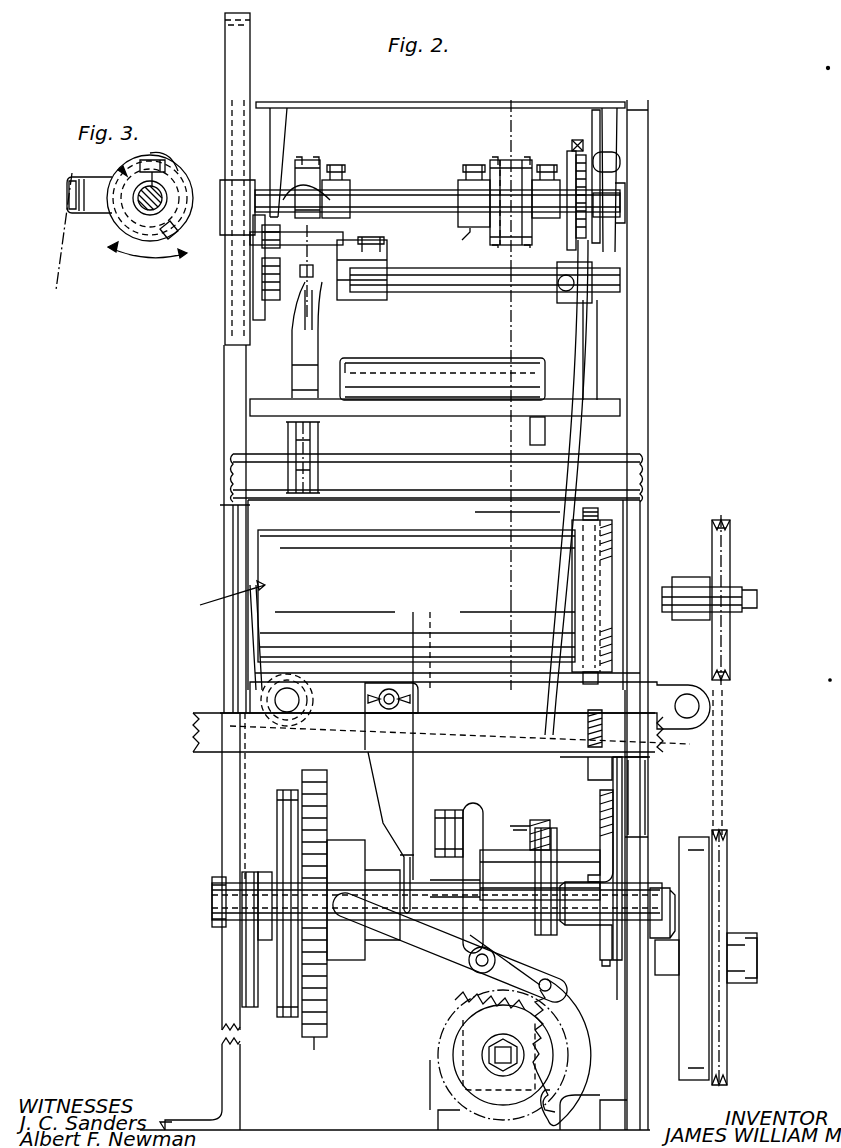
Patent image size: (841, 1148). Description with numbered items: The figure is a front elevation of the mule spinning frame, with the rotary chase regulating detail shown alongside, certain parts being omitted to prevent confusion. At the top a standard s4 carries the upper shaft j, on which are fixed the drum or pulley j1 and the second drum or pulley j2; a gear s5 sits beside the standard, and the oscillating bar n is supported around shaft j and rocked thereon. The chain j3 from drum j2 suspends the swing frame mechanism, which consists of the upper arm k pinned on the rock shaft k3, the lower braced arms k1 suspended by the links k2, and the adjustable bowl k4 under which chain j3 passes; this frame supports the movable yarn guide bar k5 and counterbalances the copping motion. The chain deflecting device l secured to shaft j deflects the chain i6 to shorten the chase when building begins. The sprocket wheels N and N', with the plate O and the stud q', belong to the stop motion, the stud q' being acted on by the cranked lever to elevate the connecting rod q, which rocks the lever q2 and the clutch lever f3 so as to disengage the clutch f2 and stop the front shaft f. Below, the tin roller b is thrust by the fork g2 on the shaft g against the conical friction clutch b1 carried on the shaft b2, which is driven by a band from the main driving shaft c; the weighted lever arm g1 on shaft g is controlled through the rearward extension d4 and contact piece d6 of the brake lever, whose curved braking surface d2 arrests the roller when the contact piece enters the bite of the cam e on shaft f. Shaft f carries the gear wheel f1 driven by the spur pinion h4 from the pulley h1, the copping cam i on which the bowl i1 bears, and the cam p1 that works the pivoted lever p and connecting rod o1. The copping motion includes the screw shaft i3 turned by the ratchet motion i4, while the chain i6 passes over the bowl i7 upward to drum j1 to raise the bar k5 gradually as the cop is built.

In FIG. 2, the standard s4 is at (245, 50).
In FIG. 2, the gear on standard s5 is at (258, 248).
In FIG. 2, the oscillating bar n is at (413, 107).
In FIG. 3, the upper shaft j is at (162, 190).
In FIG. 2, the upper shaft j is at (430, 200).
In FIG. 3, the drum or pulley j1 is at (124, 170).
In FIG. 2, the drum or pulley j1 is at (508, 160).
In FIG. 2, the drum or pulley j2 is at (312, 158).
In FIG. 2, the chain j3 is at (312, 292).
In FIG. 2, the projecting stud q' is at (620, 185).
In FIG. 2, the sprocket wheel N is at (634, 176).
In FIG. 2, the plate O is at (588, 176).
In FIG. 2, the sprocket wheel N' is at (635, 203).
In FIG. 2, the upper arm k is at (280, 290).
In FIG. 2, the braced arms k1 is at (330, 390).
In FIG. 2, the links k2 is at (292, 340).
In FIG. 2, the rock shaft k3 is at (455, 292).
In FIG. 2, the adjustable bowl k4 is at (455, 378).
In FIG. 2, the yarn guide bar k5 is at (610, 400).
In FIG. 3, the chain deflecting device l is at (92, 216).
In FIG. 2, the tin roller b is at (444, 595).
In FIG. 2, the conical friction clutch b1 is at (595, 558).
In FIG. 2, the shaft b2 is at (676, 620).
In FIG. 2, the curved braking surface d2 is at (600, 512).
In FIG. 2, the rearward extension d4 is at (602, 738).
In FIG. 2, the contact piece d6 is at (612, 860).
In FIG. 2, the connecting rod q is at (513, 513).
In FIG. 2, the lever q2 is at (432, 690).
In FIG. 2, the shaft g is at (295, 695).
In FIG. 2, the weighted lever arm g1 is at (520, 680).
In FIG. 2, the fork g2 is at (253, 634).
In FIG. 2, the connecting rod o1 is at (560, 590).
In FIG. 2, the copping cam i is at (440, 945).
In FIG. 2, the bowl i1 is at (448, 810).
In FIG. 2, the screw shaft i3 is at (500, 1055).
In FIG. 2, the ratchet motion i4 is at (555, 1068).
In FIG. 2, the chain i6 is at (510, 750).
In FIG. 2, the bowl i7 is at (492, 970).
In FIG. 2, the front shaft f is at (205, 890).
In FIG. 2, the gear wheel f1 is at (312, 1040).
In FIG. 2, the clutch f2 is at (352, 950).
In FIG. 2, the clutch lever f3 is at (380, 775).
In FIG. 2, the pulley h1 is at (280, 948).
In FIG. 2, the spur pinion h4 is at (320, 870).
In FIG. 2, the pivoted lever p is at (540, 850).
In FIG. 2, the cam p1 is at (550, 890).
In FIG. 2, the cam e is at (606, 966).
In FIG. 2, the main driving shaft c is at (672, 958).